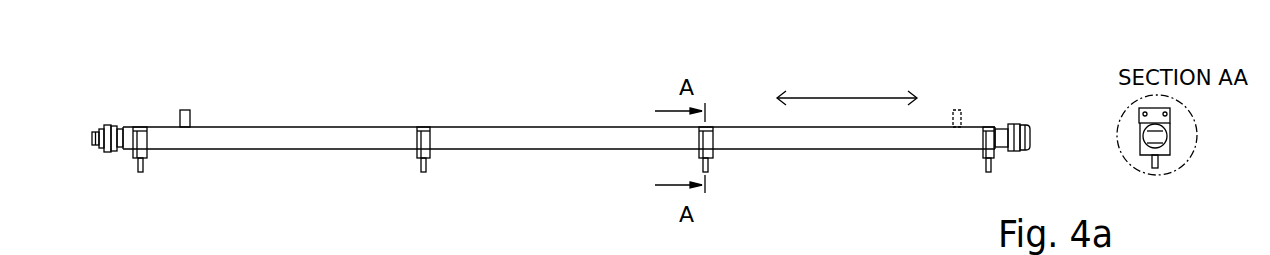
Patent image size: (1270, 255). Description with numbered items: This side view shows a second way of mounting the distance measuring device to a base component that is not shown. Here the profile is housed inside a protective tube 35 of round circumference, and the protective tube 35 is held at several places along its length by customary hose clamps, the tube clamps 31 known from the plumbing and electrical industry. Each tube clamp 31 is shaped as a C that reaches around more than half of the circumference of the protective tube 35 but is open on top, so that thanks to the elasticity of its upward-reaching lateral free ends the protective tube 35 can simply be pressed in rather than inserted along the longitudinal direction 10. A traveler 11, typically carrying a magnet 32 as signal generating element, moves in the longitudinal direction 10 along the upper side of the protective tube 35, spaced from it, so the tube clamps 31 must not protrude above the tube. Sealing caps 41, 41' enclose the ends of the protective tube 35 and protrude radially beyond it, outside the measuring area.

The longitudinal direction 10 is at (837, 98).
The traveler 11 is at (570, 81).
The magnet 32 is at (186, 110).
The tube clamp 31 is at (142, 152).
The protective tube 35 is at (507, 137).
The sealing cap 41 is at (1042, 89).
The sealing cap 41' is at (90, 85).